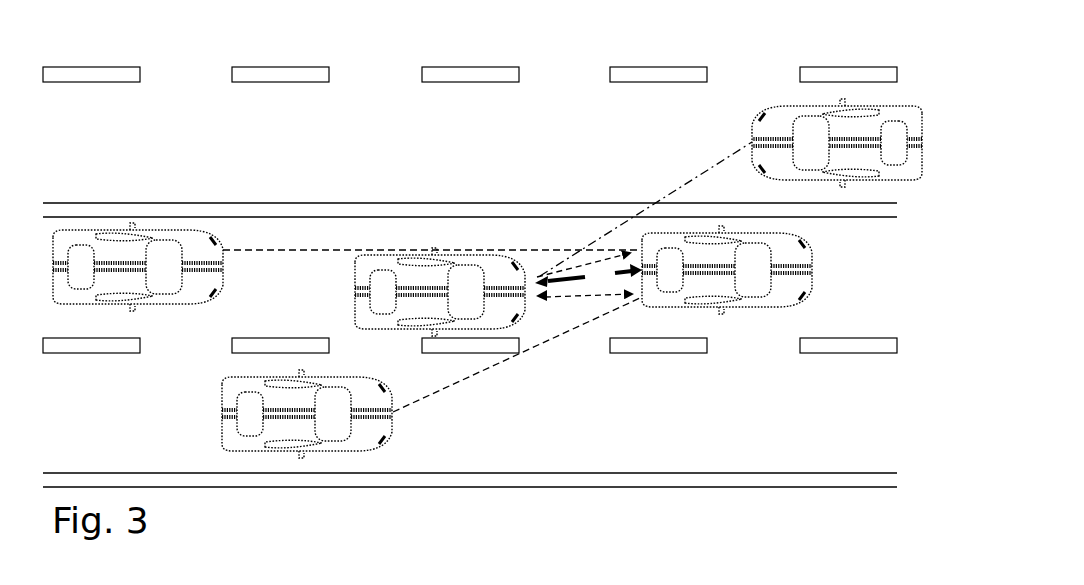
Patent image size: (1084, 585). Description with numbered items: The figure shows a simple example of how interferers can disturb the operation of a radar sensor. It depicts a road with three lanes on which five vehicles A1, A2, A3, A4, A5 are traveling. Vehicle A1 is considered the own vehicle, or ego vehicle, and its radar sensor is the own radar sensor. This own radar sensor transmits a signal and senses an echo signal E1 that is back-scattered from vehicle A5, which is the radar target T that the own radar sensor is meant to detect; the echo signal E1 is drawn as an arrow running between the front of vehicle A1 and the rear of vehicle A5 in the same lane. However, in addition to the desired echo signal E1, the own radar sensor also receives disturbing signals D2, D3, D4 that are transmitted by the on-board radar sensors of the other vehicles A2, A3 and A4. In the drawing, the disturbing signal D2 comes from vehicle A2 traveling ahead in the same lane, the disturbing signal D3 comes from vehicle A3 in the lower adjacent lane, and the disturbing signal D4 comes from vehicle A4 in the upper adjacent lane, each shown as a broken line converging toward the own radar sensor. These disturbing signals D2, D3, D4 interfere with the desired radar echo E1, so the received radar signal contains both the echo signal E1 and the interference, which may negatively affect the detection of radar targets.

The own vehicle A1 is at (490, 268).
The vehicle A2 is at (188, 240).
The vehicle A3 is at (366, 438).
The vehicle A4 is at (778, 123).
The vehicle A5 is at (808, 255).
The disturbing signal D2 is at (431, 237).
The disturbing signal D3 is at (516, 356).
The disturbing signal D4 is at (646, 209).
The echo signal E1 is at (588, 277).